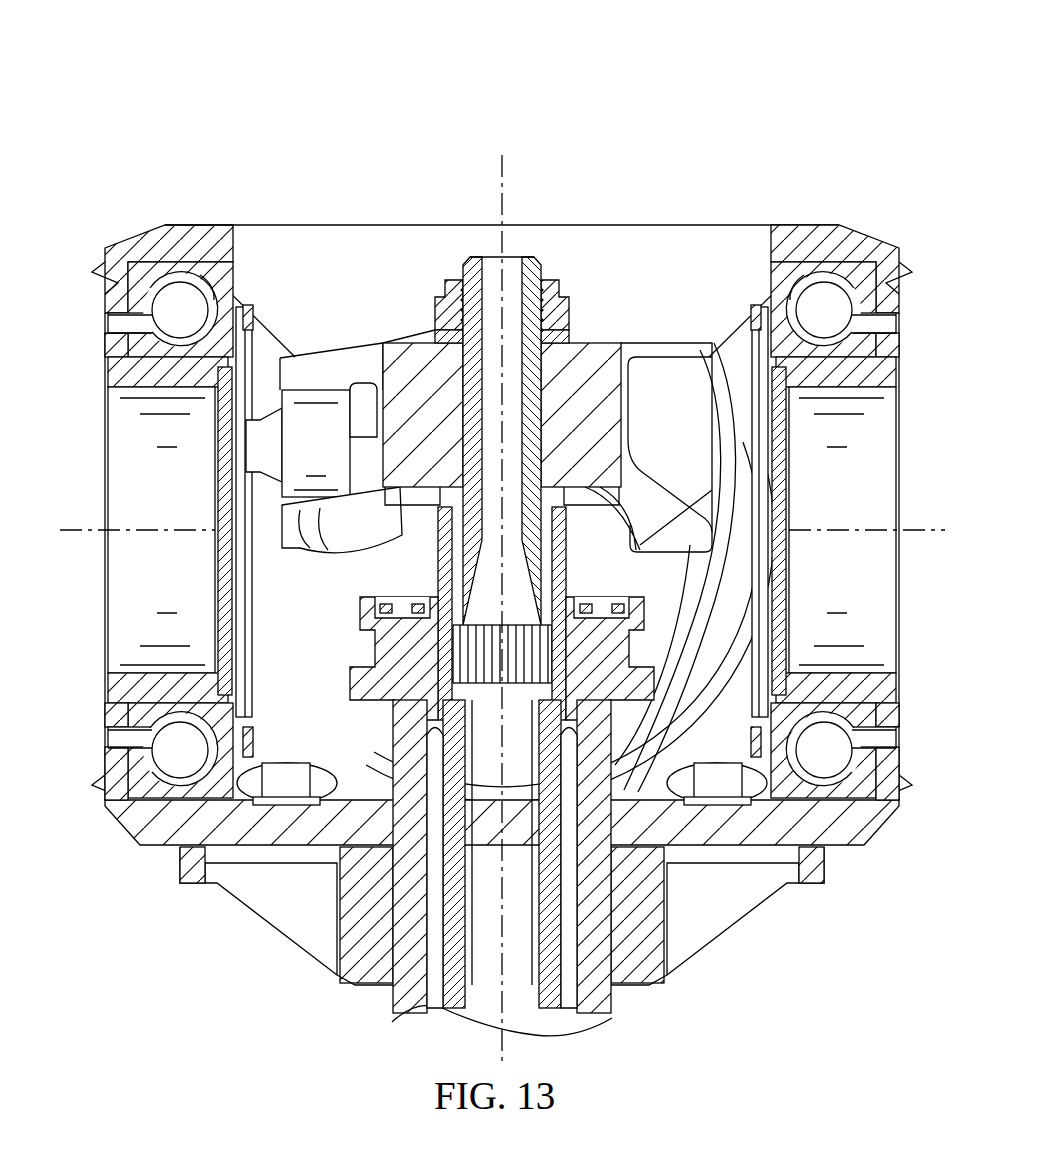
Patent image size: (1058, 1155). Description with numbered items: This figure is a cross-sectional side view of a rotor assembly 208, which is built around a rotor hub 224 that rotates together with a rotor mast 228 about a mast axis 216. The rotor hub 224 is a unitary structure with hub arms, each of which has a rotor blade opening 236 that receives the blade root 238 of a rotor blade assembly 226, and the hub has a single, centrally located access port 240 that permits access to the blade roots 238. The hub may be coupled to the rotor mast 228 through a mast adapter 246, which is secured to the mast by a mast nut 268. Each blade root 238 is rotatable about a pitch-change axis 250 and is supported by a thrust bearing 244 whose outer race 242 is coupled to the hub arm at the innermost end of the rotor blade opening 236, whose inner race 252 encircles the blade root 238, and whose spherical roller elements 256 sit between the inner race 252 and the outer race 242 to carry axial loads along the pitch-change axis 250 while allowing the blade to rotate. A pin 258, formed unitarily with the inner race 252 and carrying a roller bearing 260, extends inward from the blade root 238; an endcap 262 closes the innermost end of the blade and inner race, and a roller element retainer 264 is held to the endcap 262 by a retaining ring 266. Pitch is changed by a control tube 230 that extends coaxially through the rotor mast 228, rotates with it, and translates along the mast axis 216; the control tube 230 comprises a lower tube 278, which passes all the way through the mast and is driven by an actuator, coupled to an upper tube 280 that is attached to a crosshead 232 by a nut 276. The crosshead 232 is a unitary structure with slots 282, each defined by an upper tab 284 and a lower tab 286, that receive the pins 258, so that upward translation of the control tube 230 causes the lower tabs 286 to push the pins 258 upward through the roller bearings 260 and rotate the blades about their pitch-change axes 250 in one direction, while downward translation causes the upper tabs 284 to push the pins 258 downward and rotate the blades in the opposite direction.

The rotor assembly 208 is at (208, 88).
The mast axis 216 is at (505, 186).
The rotor hub 224 is at (150, 232).
The rotor blade assembly 226 is at (882, 392).
The rotor mast 228 is at (615, 997).
The control tube 230 is at (566, 1009).
The crosshead 232 is at (640, 332).
The rotor blade opening 236 is at (888, 322).
The blade root 238 is at (115, 377).
The access port 240 is at (742, 226).
The outer race 242 is at (168, 273).
The thrust bearing 244 is at (788, 280).
The mast adapter 246 is at (272, 925).
The pitch-change axis 250 is at (75, 530).
The inner race 252 is at (115, 346).
The roller elements 256 is at (835, 292).
The pin 258 is at (240, 450).
The roller bearing 260 is at (342, 461).
The endcap 262 is at (237, 560).
The roller element retainer 264 is at (212, 300).
The retaining ring 266 is at (252, 752).
The mast nut 268 is at (360, 617).
The nut 276 is at (438, 300).
The lower tube 278 is at (440, 1000).
The upper tube 280 is at (535, 387).
The slot 282 is at (332, 360).
The upper tab 284 is at (360, 352).
The lower tab 286 is at (343, 530).